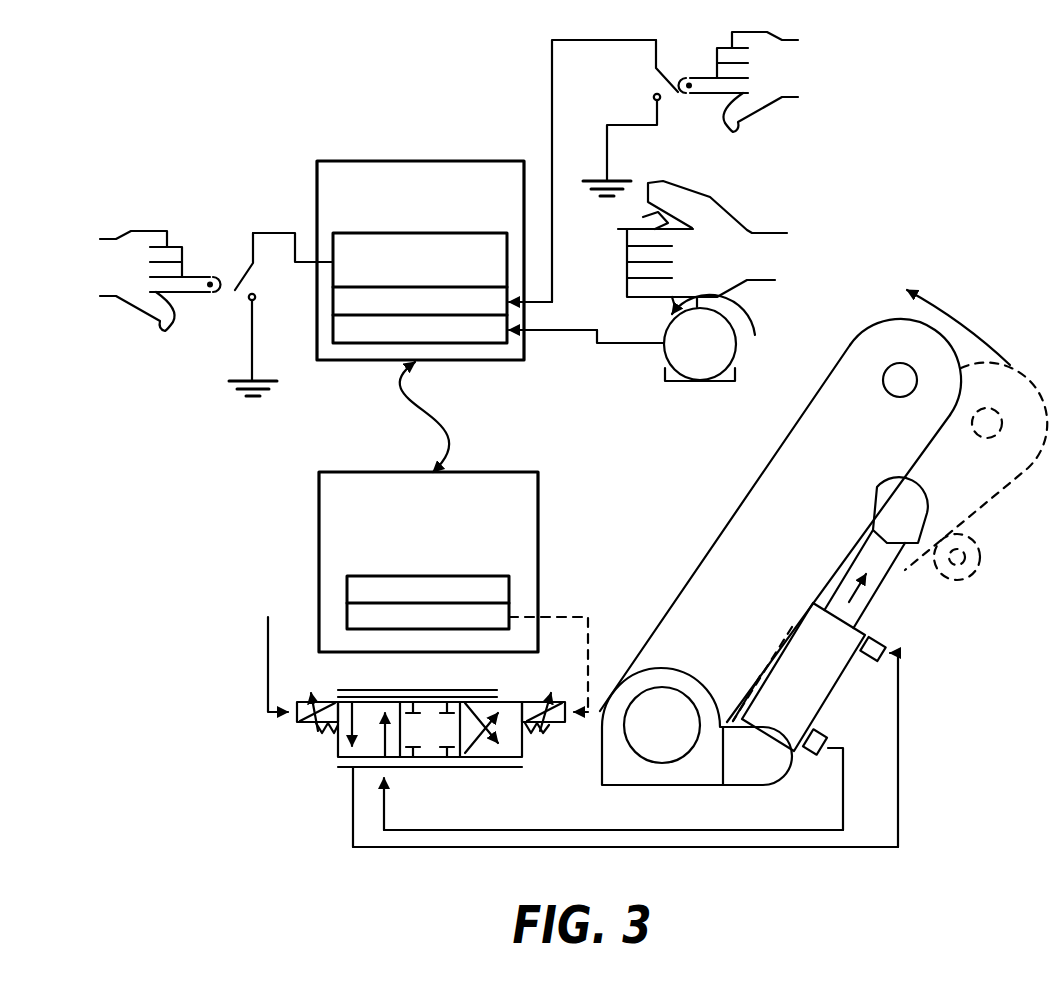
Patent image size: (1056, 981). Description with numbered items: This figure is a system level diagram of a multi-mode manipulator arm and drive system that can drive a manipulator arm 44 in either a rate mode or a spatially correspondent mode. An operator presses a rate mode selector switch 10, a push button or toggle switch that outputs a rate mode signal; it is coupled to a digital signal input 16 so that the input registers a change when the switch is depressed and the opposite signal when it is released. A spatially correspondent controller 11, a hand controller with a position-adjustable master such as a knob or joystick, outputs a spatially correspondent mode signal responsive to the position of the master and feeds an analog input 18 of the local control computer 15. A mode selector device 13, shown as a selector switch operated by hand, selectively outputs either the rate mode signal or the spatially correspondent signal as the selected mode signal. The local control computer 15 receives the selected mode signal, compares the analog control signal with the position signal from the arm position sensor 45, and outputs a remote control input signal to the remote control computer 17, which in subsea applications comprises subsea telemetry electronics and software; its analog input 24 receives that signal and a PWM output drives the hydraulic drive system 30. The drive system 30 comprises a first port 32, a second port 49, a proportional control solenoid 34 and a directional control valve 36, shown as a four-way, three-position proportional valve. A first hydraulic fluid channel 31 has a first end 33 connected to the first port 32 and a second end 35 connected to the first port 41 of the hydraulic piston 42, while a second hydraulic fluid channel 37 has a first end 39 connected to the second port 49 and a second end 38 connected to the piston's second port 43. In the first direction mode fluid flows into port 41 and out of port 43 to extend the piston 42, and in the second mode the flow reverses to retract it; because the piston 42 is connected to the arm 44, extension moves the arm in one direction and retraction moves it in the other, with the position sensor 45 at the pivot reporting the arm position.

The rate mode selector switch 10 is at (655, 82).
The spatially correspondent controller 11 is at (690, 383).
The mode selector device 13 is at (250, 307).
The local control computer 15 is at (388, 260).
The digital signal input 16 is at (318, 303).
The remote control computer 17 is at (318, 540).
The analog input 18 is at (458, 345).
The analog input of subsea subsystem 24 is at (512, 583).
The hydraulic drive system 30 is at (432, 695).
The first hydraulic fluid channel 31 is at (885, 847).
The first port 32 is at (350, 765).
The first end 33 is at (350, 798).
The proportional control solenoid 34 is at (302, 727).
The second end 35 is at (900, 655).
The directional control valve 36 is at (498, 697).
The second hydraulic fluid channel 37 is at (843, 800).
The second end 38 is at (832, 747).
The first end 39 is at (383, 797).
The first port 41 is at (878, 636).
The hydraulic piston 42 is at (810, 632).
The second port 43 is at (826, 745).
The manipulator arm 44 is at (823, 506).
The position sensor 45 is at (697, 726).
The second port 49 is at (387, 765).